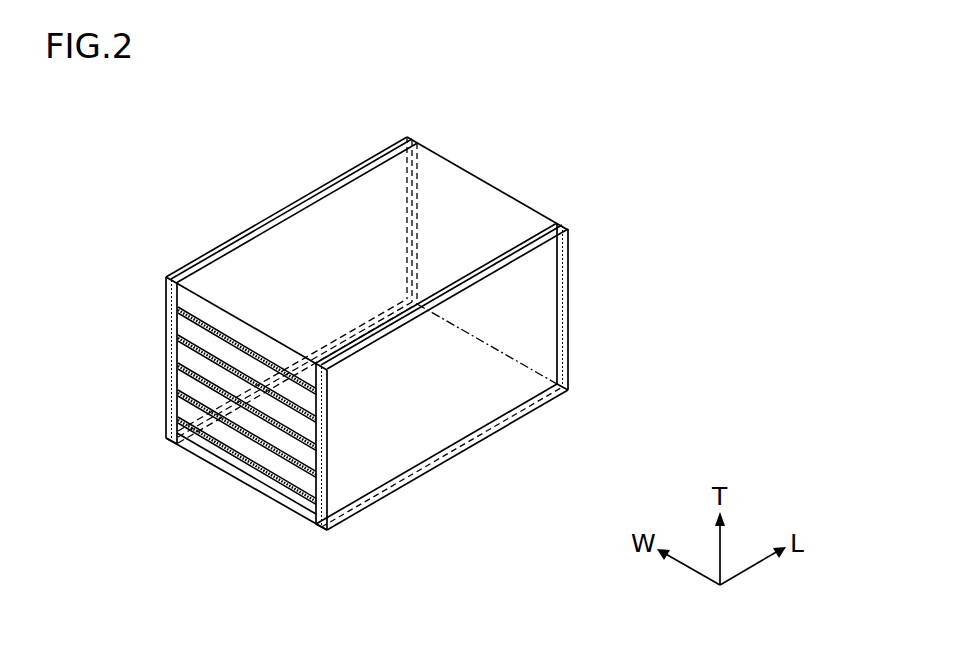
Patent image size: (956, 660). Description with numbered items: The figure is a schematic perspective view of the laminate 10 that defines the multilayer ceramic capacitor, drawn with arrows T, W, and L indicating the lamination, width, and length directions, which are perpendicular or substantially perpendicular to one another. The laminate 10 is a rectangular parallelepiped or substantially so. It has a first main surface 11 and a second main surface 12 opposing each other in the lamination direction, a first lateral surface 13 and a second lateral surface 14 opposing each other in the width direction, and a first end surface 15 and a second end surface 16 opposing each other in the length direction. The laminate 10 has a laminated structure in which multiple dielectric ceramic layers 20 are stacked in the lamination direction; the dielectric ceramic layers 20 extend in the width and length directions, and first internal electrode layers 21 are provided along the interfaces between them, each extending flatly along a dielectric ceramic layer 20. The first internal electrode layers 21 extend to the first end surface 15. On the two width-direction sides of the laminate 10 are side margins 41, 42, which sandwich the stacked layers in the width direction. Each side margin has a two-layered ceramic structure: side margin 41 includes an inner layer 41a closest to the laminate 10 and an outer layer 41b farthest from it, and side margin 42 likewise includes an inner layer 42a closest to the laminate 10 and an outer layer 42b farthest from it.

The laminate 10 is at (183, 139).
The first main surface 11 is at (393, 237).
The second main surface 12 is at (378, 462).
The first lateral surface 13 is at (322, 227).
The second lateral surface 14 is at (453, 412).
The first end surface 15 is at (237, 438).
The second end surface 16 is at (478, 230).
The dielectric ceramic layer 20 is at (222, 375).
The first internal electrode layer 21 is at (187, 322).
The side margin 41 is at (89, 184).
The inner layer 41a is at (198, 262).
The outer layer 41b is at (237, 237).
The side margin 42 is at (675, 180).
The inner layer 42a is at (540, 231).
The outer layer 42b is at (535, 248).